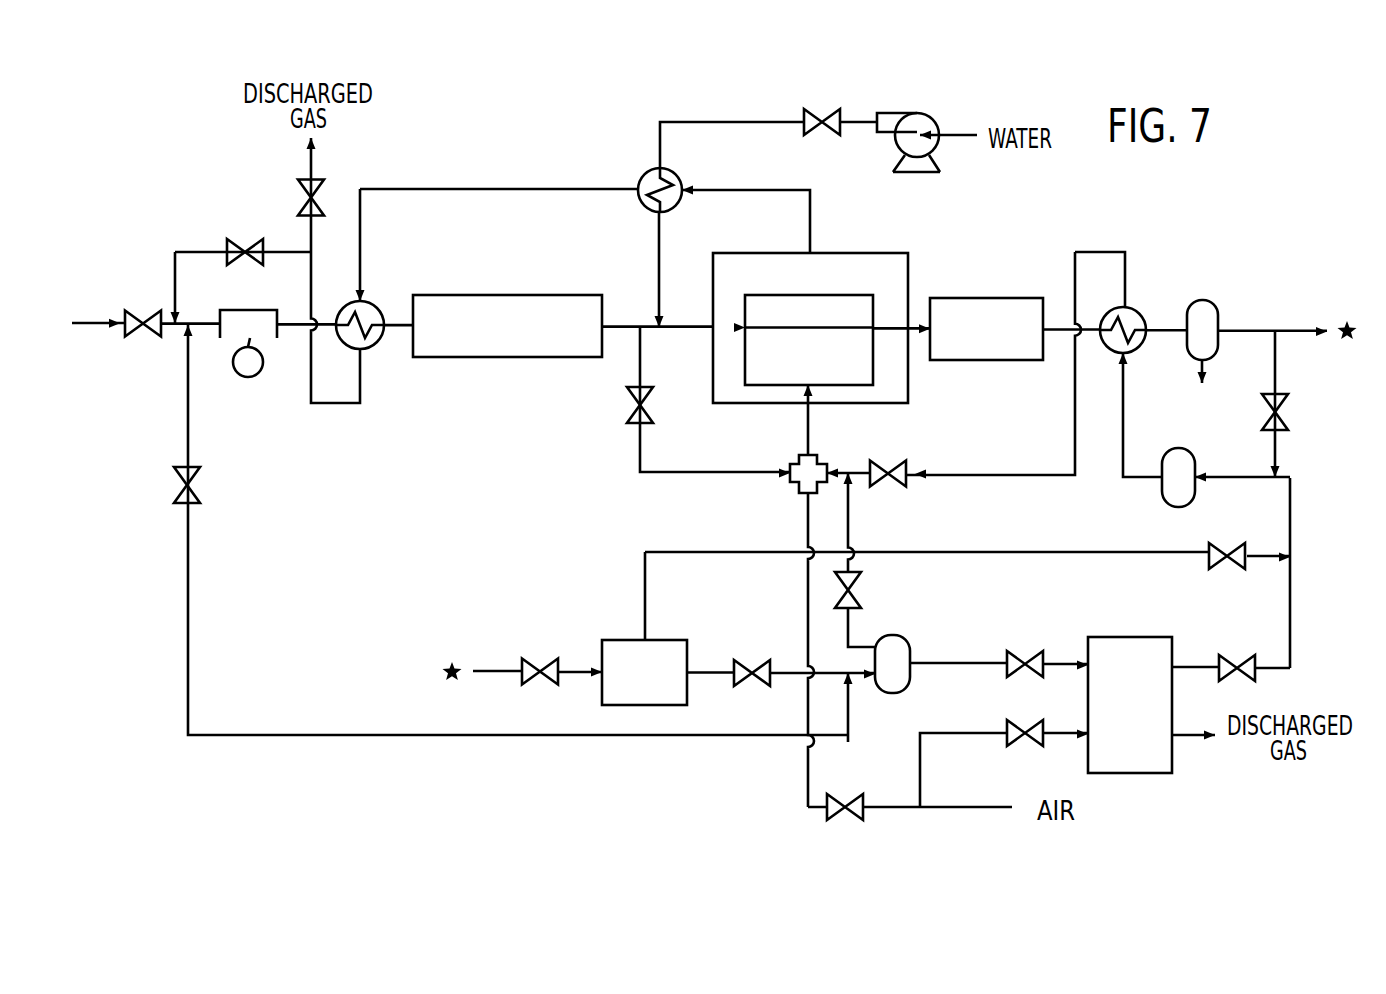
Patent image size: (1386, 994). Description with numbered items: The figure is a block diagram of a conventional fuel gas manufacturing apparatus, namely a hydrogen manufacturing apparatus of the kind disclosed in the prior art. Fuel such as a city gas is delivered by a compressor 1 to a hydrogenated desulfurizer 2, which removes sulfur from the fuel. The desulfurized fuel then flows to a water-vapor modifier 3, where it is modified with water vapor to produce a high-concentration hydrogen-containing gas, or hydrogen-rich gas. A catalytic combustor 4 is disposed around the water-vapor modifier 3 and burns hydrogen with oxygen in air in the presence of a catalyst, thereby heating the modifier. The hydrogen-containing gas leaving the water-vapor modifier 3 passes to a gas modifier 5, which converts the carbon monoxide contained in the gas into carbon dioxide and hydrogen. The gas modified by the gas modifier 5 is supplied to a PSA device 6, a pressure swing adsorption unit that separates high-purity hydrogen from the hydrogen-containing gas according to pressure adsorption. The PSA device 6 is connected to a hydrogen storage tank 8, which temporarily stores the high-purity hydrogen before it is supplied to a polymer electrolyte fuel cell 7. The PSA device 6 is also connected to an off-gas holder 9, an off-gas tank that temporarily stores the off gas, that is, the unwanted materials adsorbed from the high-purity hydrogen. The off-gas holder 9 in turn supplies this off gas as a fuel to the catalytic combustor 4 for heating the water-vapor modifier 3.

The compressor 1 is at (244, 309).
The hydrogenated desulfurizer 2 is at (590, 295).
The water-vapor modifier 3 is at (860, 295).
The catalytic combustor 4 is at (878, 253).
The gas modifier 5 is at (1033, 298).
The PSA device 6 is at (675, 640).
The polymer electrolyte fuel cell 7 is at (1160, 637).
The hydrogen storage tank 8 is at (893, 635).
The off-gas holder 9 is at (1178, 448).